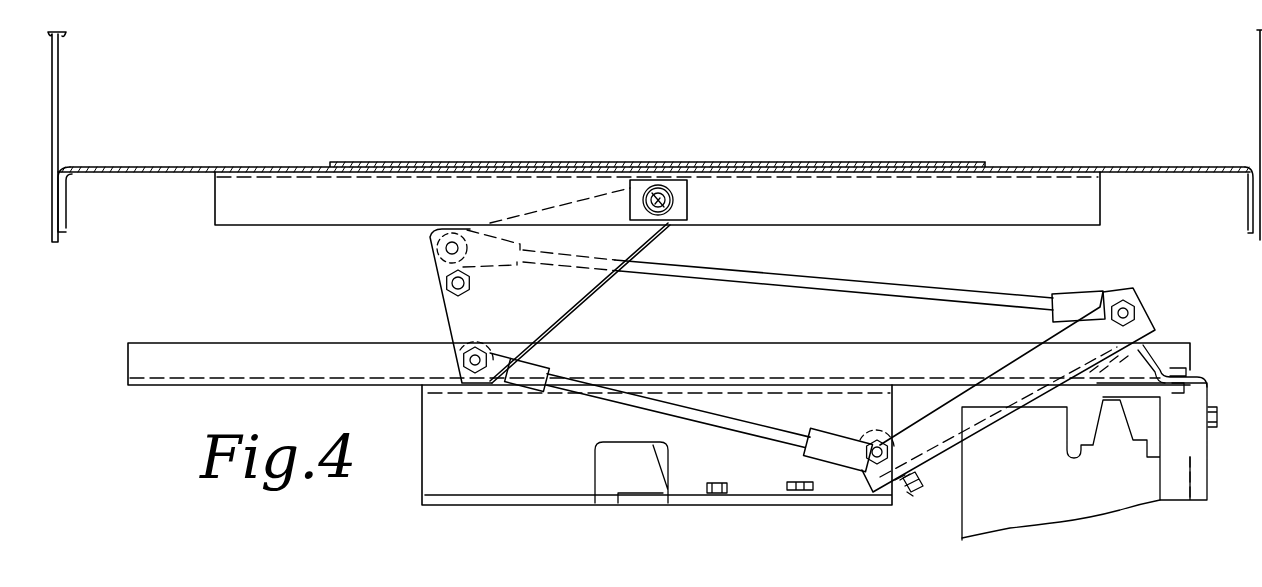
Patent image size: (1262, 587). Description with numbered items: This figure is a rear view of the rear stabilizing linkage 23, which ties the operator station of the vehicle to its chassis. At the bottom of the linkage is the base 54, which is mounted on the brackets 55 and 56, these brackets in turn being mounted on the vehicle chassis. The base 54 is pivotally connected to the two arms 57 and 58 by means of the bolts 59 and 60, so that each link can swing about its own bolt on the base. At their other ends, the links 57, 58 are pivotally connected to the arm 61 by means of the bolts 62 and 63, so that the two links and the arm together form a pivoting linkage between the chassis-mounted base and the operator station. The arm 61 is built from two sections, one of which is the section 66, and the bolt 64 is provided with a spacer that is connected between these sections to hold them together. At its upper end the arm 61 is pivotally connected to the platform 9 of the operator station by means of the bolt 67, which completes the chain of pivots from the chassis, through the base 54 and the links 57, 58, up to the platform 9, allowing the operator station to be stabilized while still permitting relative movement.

The platform 9 is at (182, 168).
The rear stabilizing linkage 23 is at (985, 279).
The base 54 is at (1047, 405).
The bracket 55 is at (1193, 378).
The bracket 56 is at (912, 495).
The arm 57 is at (838, 281).
The arm 58 is at (738, 430).
The bolt 59 is at (1128, 312).
The bolt 60 is at (875, 449).
The arm 61 is at (592, 296).
The bolt 62 is at (450, 249).
The bolt 63 is at (478, 356).
The bolt 64 is at (449, 291).
The section of the arm 66 is at (553, 317).
The bolt 67 is at (688, 198).